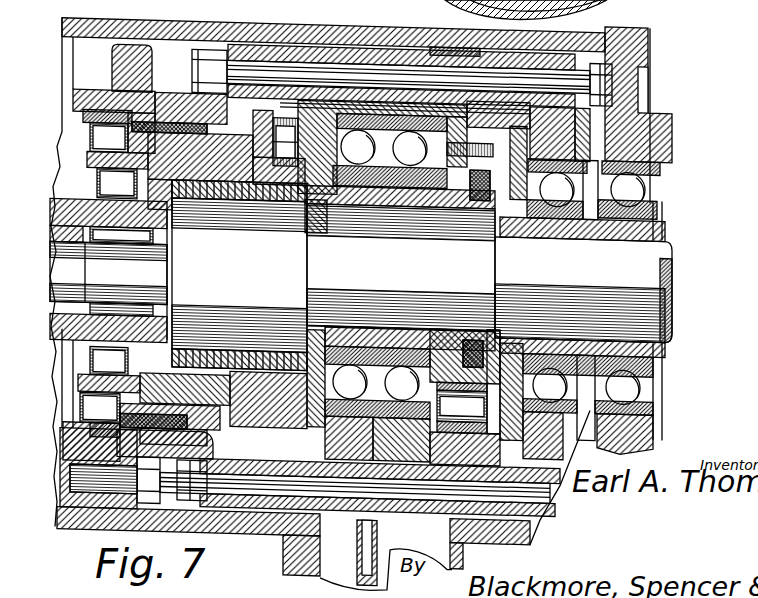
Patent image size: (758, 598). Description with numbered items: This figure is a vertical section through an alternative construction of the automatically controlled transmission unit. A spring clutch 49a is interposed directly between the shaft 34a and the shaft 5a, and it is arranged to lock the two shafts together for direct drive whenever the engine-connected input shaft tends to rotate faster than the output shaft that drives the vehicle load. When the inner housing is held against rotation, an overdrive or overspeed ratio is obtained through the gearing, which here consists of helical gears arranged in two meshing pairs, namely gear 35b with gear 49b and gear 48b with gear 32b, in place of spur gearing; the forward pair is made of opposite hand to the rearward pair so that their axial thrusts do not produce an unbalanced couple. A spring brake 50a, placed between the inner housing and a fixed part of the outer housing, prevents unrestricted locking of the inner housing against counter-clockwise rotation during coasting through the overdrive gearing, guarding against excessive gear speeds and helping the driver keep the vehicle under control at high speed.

The shaft 5a is at (57, 346).
The helical gear 32b is at (273, 149).
The shaft 34a is at (665, 241).
The helical gear 35b is at (462, 402).
The helical gear 48b is at (294, 110).
The spring clutch 49a is at (212, 372).
The helical gear 49b is at (488, 393).
The spring brake 50a is at (191, 105).